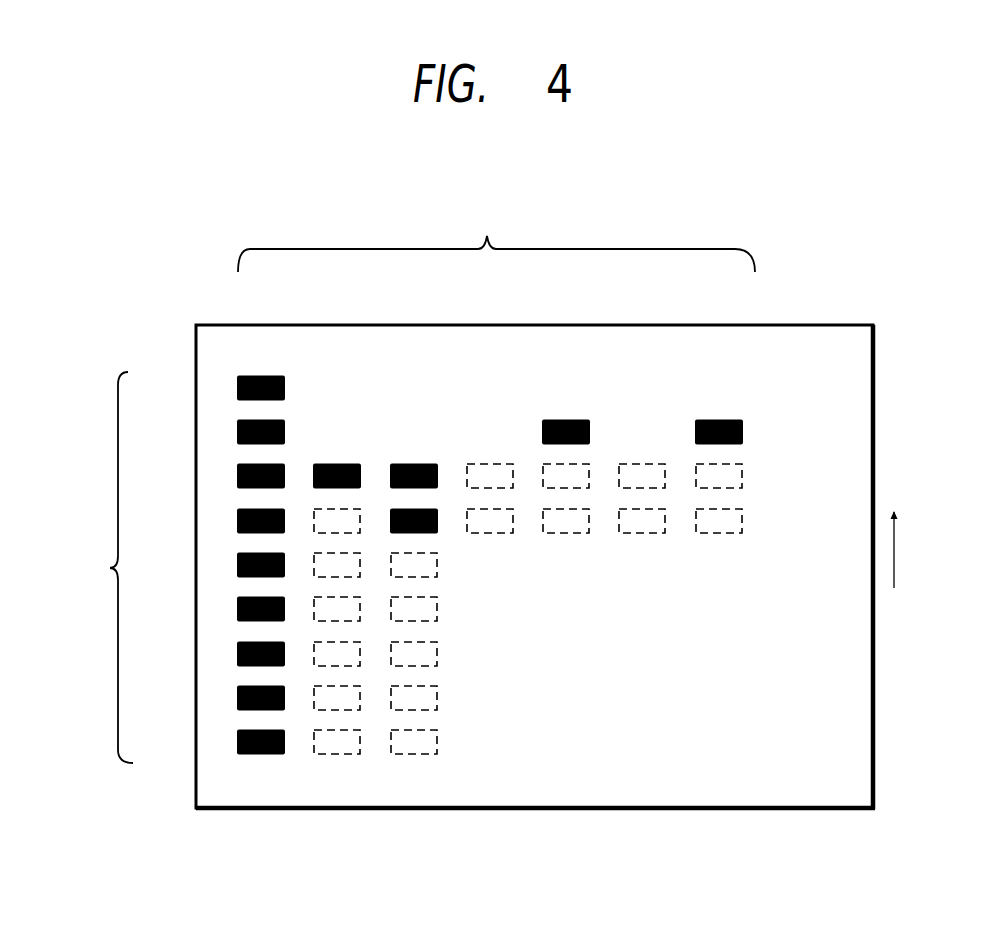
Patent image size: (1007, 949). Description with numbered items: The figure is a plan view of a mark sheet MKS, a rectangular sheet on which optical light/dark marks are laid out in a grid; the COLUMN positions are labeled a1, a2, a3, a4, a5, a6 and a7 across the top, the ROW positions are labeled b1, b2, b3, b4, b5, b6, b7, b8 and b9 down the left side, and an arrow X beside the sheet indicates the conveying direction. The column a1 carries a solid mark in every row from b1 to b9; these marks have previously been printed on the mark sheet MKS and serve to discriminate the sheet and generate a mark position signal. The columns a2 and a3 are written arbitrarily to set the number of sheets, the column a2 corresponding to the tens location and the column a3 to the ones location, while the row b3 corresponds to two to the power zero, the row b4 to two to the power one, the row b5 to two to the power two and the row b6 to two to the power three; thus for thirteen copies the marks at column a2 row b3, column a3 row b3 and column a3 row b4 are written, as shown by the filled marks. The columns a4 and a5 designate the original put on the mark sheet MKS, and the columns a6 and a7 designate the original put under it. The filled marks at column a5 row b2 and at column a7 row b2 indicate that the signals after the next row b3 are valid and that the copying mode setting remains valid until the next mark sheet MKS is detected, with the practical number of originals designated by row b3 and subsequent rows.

The mark sheet MKS is at (810, 325).
The conveying direction X is at (895, 534).
The column COLUMN is at (496, 238).
The row ROW is at (94, 567).
The column a1 is at (261, 313).
The column a2 is at (337, 313).
The column a3 is at (414, 313).
The column a4 is at (490, 313).
The column a5 is at (566, 313).
The column a6 is at (642, 313).
The column a7 is at (719, 313).
The row b1 is at (187, 390).
The row b2 is at (187, 434).
The row b3 is at (187, 478).
The row b4 is at (187, 523).
The row b5 is at (187, 567).
The row b6 is at (187, 611).
The row b7 is at (187, 656).
The row b8 is at (187, 700).
The row b9 is at (187, 744).